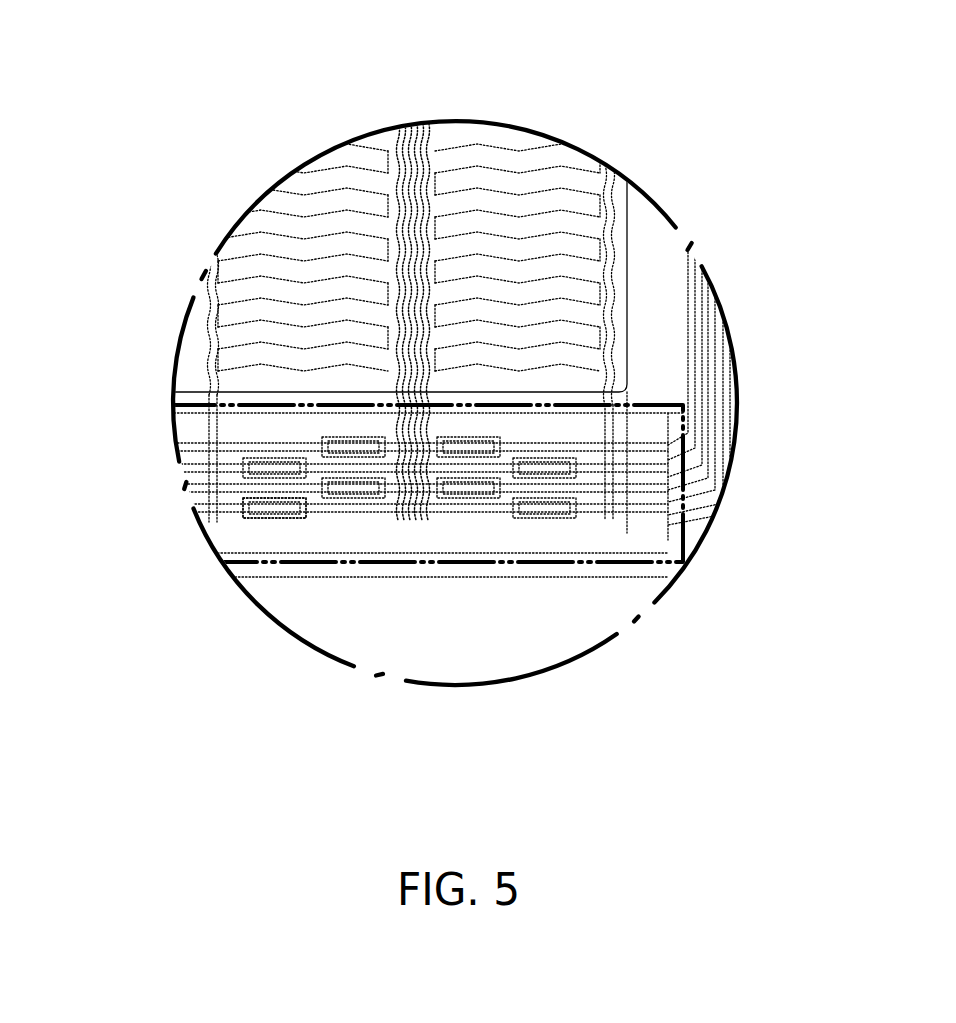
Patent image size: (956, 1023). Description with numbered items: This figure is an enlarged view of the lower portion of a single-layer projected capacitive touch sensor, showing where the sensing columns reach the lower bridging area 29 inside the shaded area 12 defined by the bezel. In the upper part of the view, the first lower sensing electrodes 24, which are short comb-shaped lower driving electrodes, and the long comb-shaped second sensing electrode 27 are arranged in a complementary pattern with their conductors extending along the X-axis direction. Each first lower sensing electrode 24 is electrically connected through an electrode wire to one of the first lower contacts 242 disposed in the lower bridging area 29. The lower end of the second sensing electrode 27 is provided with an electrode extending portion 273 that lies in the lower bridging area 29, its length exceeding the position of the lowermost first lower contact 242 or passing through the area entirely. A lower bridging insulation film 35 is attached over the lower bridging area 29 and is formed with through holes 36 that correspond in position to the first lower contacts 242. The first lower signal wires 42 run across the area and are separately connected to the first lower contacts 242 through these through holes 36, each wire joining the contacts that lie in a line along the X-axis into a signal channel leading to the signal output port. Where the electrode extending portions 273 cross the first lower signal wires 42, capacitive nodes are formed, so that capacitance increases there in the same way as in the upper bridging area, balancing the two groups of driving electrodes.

The shaded area 12 is at (662, 250).
The first lower sensing electrodes 24 is at (392, 158).
The second sensing electrode 27 is at (220, 297).
The lower bridging area 29 is at (664, 402).
The lower bridging insulation film 35 is at (662, 532).
The first lower signal wires 42 is at (373, 507).
The electrode extending portion 273 is at (217, 477).
The first lower contacts 242 is at (262, 518).
The through holes 36 is at (204, 604).